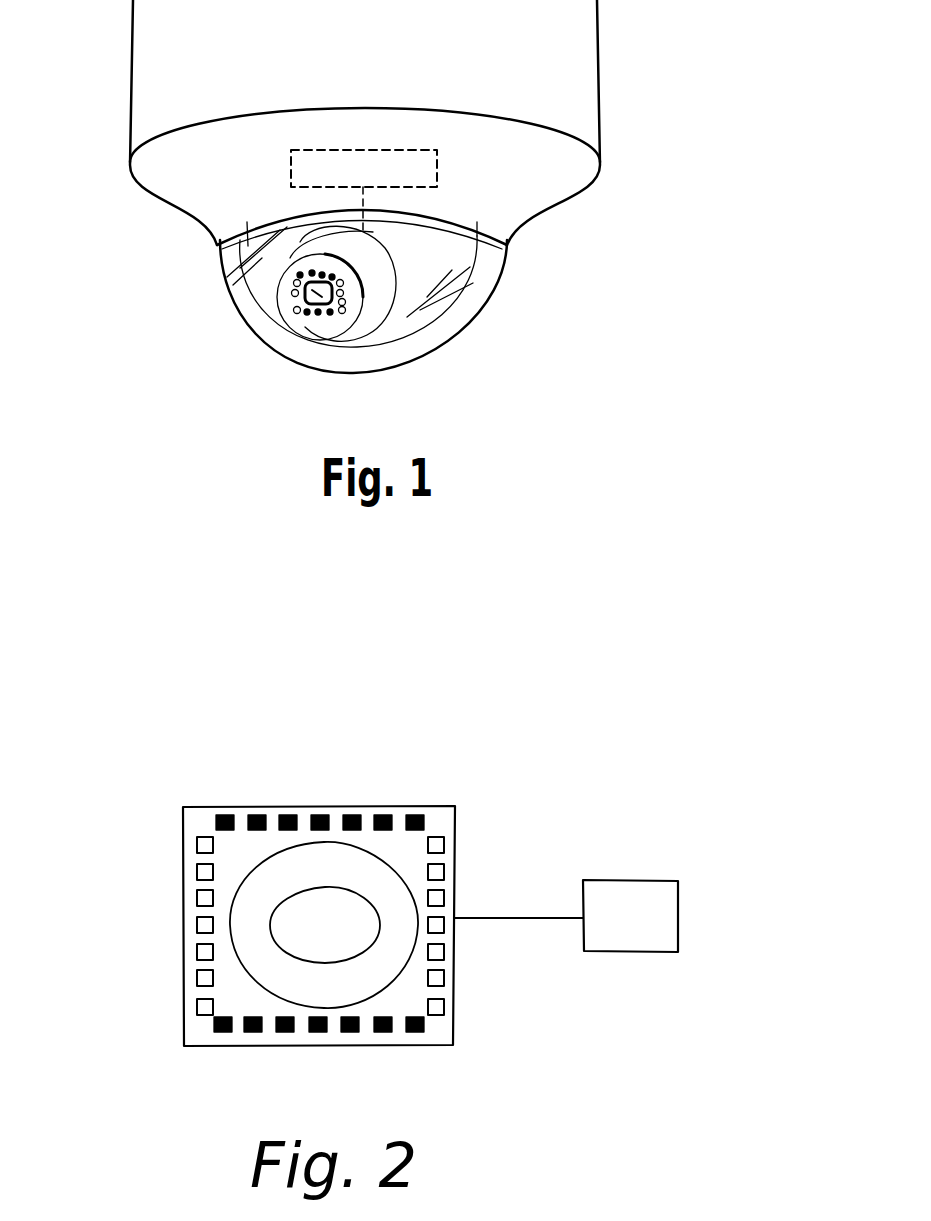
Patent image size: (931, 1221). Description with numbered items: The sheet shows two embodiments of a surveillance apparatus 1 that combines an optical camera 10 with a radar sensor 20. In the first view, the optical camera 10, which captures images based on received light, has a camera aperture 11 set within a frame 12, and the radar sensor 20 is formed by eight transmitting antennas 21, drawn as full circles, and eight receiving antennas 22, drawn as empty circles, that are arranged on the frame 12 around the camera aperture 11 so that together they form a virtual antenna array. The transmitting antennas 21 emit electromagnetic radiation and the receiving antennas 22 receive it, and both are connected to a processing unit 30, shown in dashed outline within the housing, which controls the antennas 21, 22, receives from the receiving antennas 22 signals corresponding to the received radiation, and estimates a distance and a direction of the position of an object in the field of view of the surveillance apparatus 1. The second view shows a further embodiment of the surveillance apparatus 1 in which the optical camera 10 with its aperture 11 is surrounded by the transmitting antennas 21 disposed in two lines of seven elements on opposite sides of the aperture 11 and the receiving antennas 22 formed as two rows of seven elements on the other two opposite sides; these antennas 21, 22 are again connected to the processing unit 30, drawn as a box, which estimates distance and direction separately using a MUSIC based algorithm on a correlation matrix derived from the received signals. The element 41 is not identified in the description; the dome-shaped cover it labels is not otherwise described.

In FIG. 2, the surveillance apparatus 1 is at (508, 780).
In FIG. 1, the optical camera 10 is at (383, 272).
In FIG. 1, the camera aperture 11 is at (292, 286).
In FIG. 2, the camera aperture 11 is at (343, 940).
In FIG. 1, the frame 12 is at (290, 312).
In FIG. 1, the radar sensor 20 is at (260, 255).
In FIG. 1, the transmitting antennas 21 is at (317, 313).
In FIG. 2, the transmitting antennas 21 is at (327, 808).
In FIG. 1, the receiving antennas 22 is at (348, 313).
In FIG. 2, the receiving antennas 22 is at (452, 895).
In FIG. 1, the processing unit 30 is at (291, 168).
In FIG. 2, the processing unit 30 is at (670, 912).
In FIG. 1, the dome cover 41 is at (467, 333).